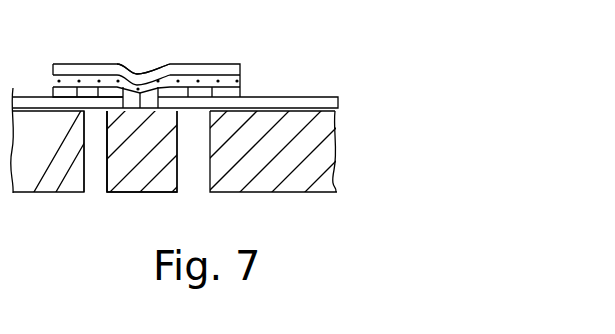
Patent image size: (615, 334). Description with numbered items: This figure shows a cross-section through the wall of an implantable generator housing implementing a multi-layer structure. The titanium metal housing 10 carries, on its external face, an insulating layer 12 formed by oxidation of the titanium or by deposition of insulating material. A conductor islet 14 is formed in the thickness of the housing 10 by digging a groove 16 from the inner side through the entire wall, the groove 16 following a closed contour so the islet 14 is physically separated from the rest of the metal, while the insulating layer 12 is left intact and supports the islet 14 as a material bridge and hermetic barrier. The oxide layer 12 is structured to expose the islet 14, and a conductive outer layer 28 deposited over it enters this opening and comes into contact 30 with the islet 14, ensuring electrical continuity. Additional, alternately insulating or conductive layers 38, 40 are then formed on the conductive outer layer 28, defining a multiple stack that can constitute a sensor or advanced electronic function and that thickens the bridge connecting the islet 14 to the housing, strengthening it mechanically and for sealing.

The titanium metal housing 10 is at (322, 148).
The insulating layer 12 is at (338, 100).
The conductor islet 14 is at (135, 173).
The groove 16 is at (95, 178).
The conductive outer layer 28 is at (242, 88).
The contact 30 is at (140, 90).
The additional layer 38 is at (213, 80).
The additional layer 40 is at (170, 70).